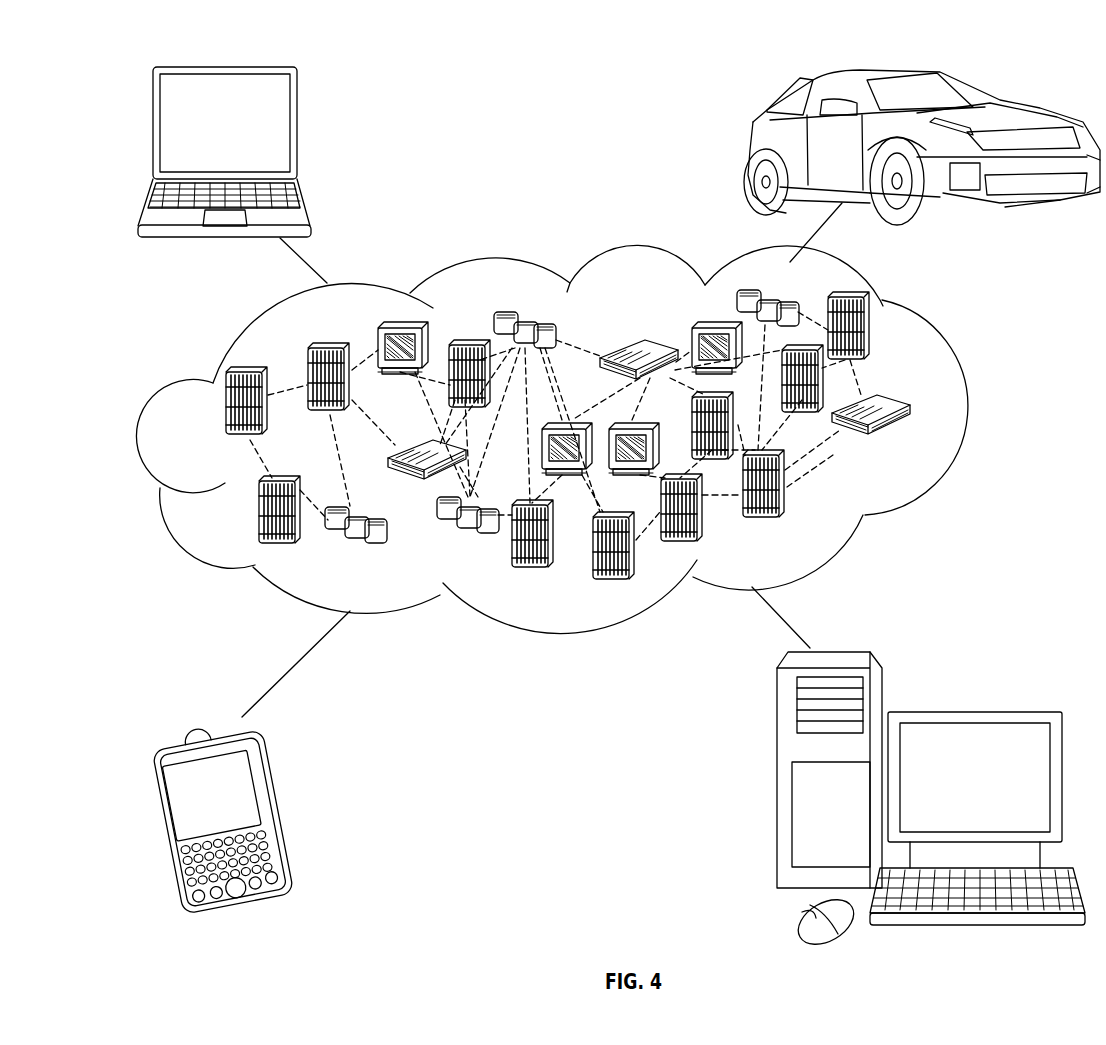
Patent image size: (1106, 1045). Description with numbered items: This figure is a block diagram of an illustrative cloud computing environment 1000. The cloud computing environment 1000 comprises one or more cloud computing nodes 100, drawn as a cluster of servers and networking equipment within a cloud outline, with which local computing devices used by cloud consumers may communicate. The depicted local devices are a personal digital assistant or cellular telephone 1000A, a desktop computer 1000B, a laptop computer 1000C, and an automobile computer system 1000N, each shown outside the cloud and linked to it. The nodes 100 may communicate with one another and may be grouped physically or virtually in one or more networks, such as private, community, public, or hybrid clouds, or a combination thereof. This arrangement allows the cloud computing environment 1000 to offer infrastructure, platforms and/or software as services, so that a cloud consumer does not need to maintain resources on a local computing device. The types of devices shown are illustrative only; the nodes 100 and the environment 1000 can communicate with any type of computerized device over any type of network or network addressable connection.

The cloud computing nodes 100 is at (596, 439).
The cloud computing environment 1000 is at (968, 414).
The personal digital assistant or cellular telephone 1000A is at (285, 808).
The desktop computer 1000B is at (970, 710).
The laptop computer 1000C is at (298, 130).
The automobile computer system 1000N is at (748, 148).